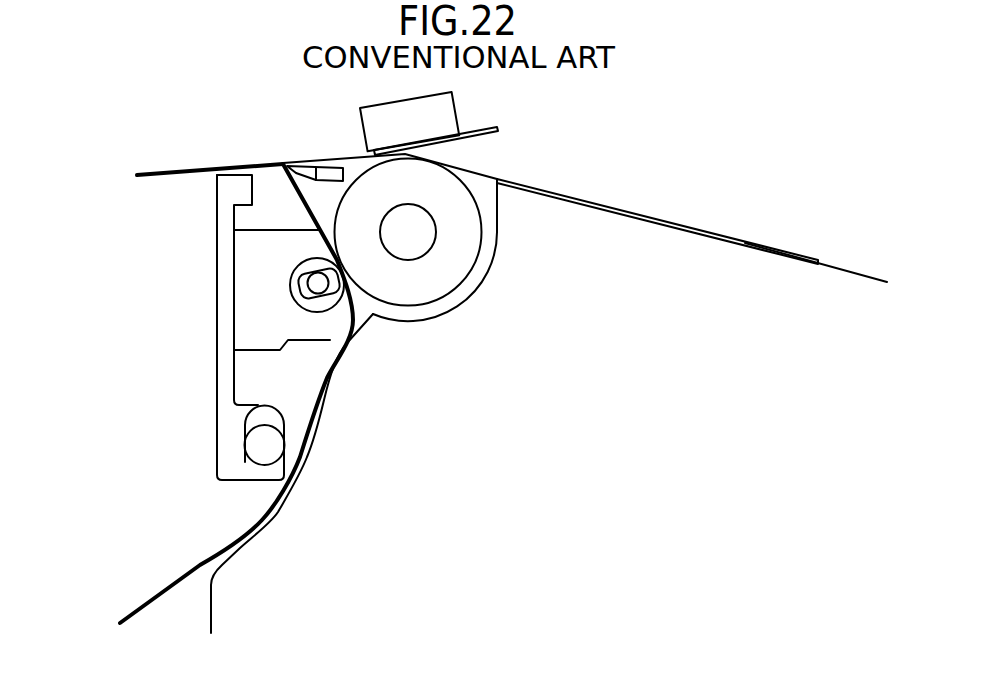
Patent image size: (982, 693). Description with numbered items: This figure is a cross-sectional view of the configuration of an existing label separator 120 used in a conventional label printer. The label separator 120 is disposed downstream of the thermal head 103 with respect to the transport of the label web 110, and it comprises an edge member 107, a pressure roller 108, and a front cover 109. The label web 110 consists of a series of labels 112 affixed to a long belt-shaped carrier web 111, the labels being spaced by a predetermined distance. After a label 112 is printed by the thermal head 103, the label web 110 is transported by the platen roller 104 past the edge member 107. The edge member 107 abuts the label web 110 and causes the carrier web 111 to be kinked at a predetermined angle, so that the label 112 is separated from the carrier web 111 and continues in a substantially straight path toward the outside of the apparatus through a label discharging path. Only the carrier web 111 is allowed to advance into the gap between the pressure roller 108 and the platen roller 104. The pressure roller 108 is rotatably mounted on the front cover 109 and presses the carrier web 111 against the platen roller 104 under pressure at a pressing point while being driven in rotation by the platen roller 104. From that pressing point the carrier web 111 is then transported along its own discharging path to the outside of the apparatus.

The thermal head 103 is at (462, 104).
The platen roller 104 is at (460, 282).
The edge member 107 is at (307, 170).
The pressure roller 108 is at (328, 302).
The front cover 109 is at (222, 245).
The label web 110 is at (720, 233).
The carrier web 111 is at (163, 587).
The label 112 is at (233, 163).
The label separator 120 is at (160, 108).